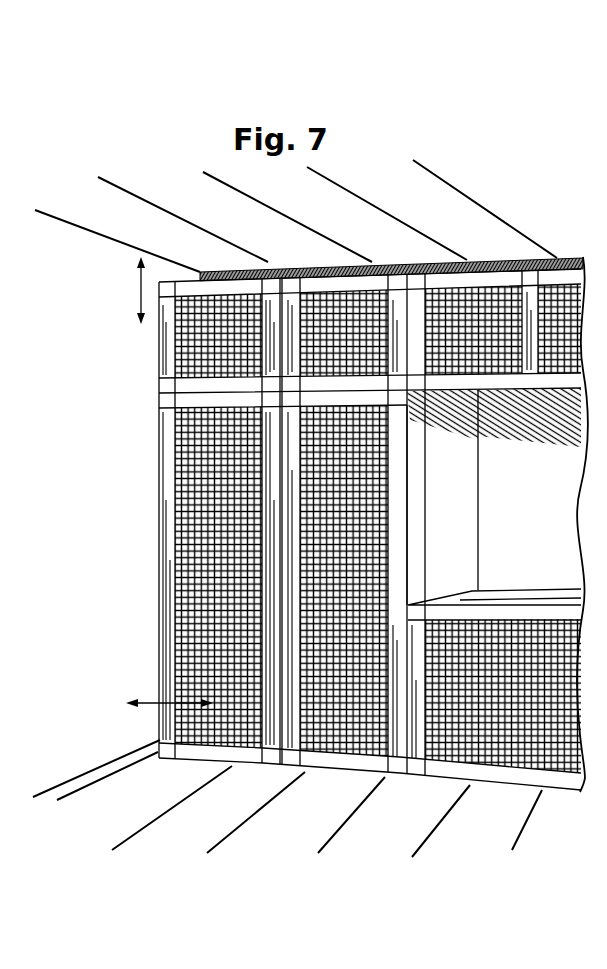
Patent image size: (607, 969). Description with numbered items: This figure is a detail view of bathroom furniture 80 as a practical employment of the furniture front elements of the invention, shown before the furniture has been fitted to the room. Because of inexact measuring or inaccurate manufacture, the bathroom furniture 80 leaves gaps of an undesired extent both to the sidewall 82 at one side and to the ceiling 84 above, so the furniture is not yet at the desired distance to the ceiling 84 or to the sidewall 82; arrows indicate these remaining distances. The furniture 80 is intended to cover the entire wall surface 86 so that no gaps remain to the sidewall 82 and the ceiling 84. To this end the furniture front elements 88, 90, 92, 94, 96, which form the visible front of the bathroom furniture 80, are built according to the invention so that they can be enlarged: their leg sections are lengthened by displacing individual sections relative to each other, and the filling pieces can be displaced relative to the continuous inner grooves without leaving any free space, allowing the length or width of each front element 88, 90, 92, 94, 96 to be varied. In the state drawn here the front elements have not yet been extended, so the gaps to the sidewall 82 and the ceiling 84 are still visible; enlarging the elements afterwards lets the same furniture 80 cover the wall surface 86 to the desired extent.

The bathroom furniture 80 is at (333, 781).
The sidewall 82 is at (118, 590).
The ceiling 84 is at (290, 198).
The wall surface 86 is at (320, 273).
The furniture front element 88 is at (203, 733).
The furniture front element 90 is at (231, 307).
The furniture front element 92 is at (364, 307).
The furniture front element 94 is at (488, 300).
The furniture front element 96 is at (567, 277).